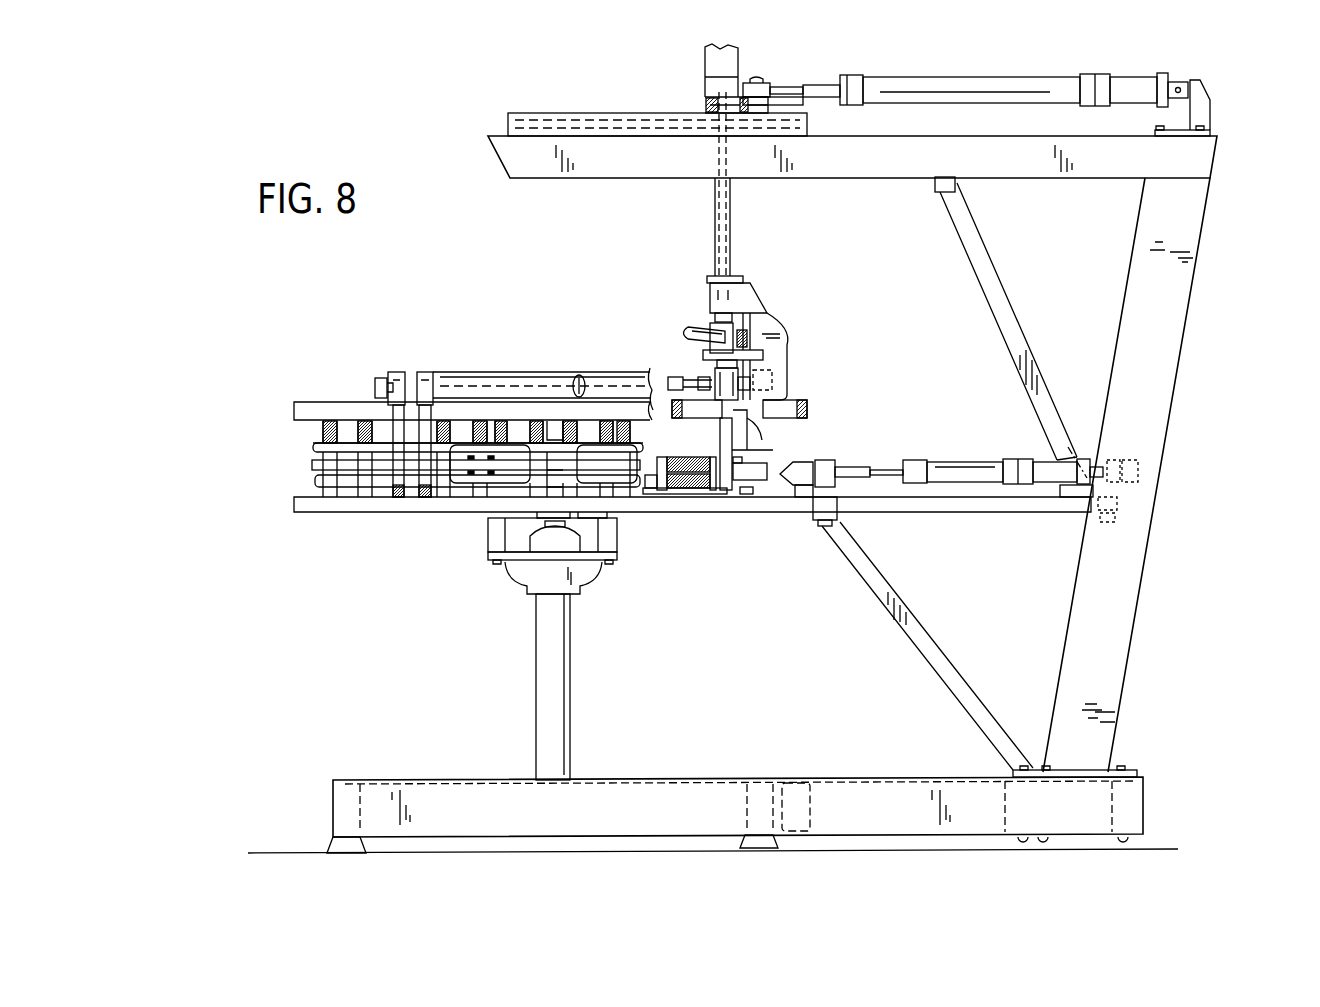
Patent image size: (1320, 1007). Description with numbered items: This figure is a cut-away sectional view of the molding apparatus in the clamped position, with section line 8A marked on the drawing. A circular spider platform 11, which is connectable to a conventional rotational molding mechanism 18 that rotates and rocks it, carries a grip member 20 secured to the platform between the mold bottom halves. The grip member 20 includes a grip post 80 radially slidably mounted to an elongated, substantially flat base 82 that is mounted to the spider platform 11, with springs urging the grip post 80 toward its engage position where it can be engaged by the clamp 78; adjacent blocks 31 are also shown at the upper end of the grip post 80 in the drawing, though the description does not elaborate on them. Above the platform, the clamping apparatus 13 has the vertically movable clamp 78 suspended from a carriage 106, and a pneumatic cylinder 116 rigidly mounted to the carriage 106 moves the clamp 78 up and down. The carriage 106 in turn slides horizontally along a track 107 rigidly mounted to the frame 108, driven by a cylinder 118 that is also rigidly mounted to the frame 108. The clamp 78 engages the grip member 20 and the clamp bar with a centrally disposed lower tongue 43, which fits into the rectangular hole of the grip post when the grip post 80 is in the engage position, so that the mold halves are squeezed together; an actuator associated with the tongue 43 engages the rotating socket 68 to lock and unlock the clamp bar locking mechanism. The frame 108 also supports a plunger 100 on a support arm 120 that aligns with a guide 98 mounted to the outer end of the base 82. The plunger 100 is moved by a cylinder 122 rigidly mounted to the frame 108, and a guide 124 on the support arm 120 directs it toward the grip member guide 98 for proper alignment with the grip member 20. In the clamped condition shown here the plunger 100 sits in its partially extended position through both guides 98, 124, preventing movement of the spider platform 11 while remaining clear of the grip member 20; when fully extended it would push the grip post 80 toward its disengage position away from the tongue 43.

The spider platform 11 is at (688, 507).
The clamping apparatus 13 is at (1232, 106).
The rotational molding mechanism 18 is at (600, 588).
The grip member 20 is at (742, 451).
The guide blocks 31 is at (817, 410).
The lower tongue 43 is at (747, 422).
The rotating socket 68 is at (577, 382).
The clamp 78 is at (770, 286).
The grip post 80 is at (722, 428).
The base 82 is at (742, 493).
The guide 98 is at (800, 464).
The plunger 100 is at (853, 477).
The carriage 106 is at (807, 105).
The track 107 is at (540, 118).
The frame 108 is at (1205, 234).
The pneumatic cylinder 116 is at (738, 58).
The cylinder 118 is at (1010, 79).
The support arm 120 is at (972, 507).
The cylinder 122 is at (960, 460).
The guide 124 is at (833, 465).
The section view indicator 8A is at (692, 452).